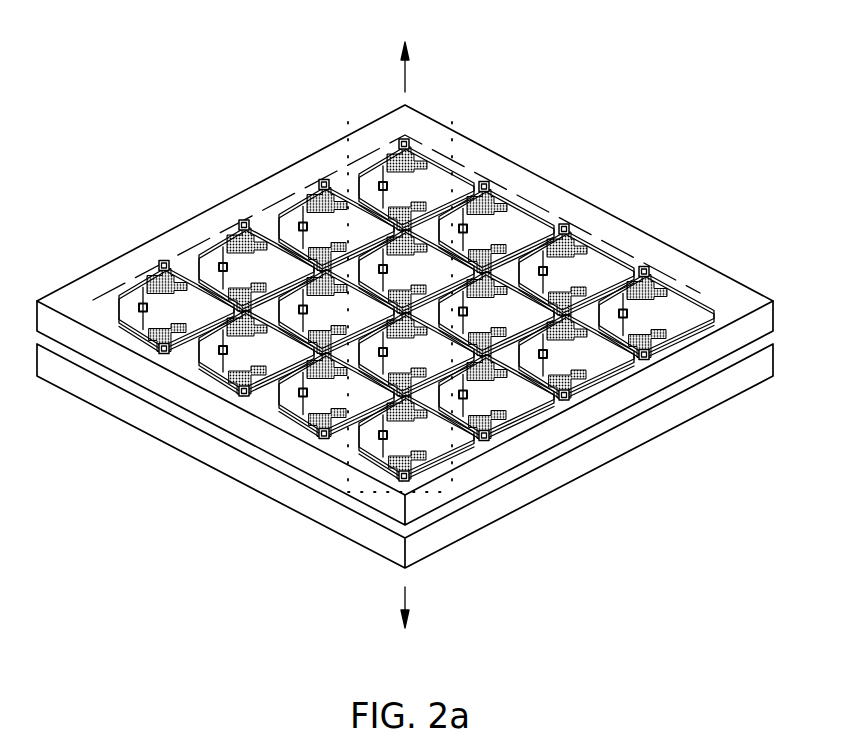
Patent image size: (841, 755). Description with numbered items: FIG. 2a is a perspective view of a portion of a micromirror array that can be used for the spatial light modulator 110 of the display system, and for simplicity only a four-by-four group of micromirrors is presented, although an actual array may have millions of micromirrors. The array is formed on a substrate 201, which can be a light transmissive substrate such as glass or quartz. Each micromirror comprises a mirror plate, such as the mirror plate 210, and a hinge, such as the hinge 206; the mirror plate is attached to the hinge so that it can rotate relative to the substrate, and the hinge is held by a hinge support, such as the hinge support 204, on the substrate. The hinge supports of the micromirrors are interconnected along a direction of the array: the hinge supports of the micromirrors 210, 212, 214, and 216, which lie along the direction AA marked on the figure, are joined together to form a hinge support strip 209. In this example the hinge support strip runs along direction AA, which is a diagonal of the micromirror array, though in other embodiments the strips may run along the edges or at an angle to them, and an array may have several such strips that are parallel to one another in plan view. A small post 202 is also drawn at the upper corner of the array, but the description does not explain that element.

The spatial light modulator 110 is at (405, 323).
The substrate 201 is at (220, 212).
The connector pin 202 is at (410, 133).
The hinge support 204 is at (355, 175).
The hinge 206 is at (382, 170).
The hinge support strip 209 is at (440, 495).
The mirror plate 210 is at (378, 154).
The micromirror 212 is at (446, 282).
The micromirror 214 is at (448, 364).
The micromirror 216 is at (448, 446).